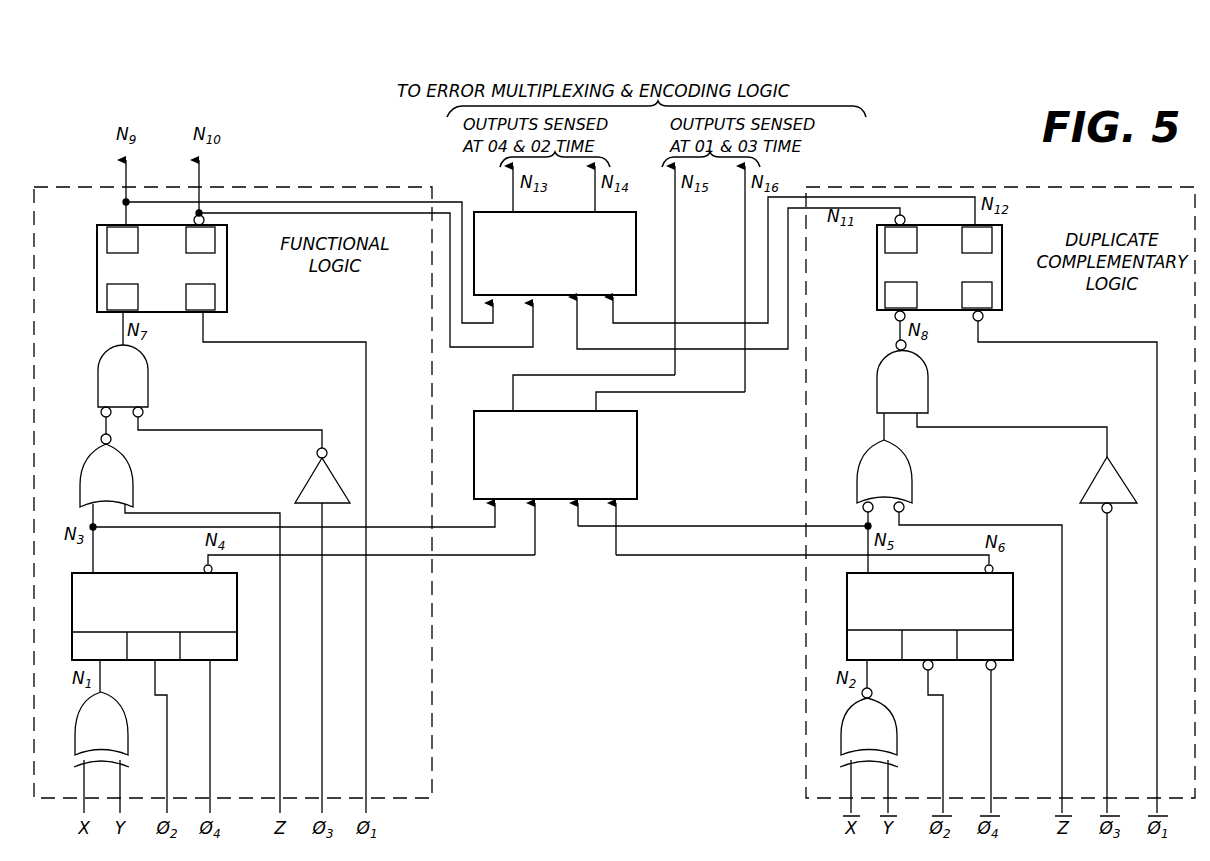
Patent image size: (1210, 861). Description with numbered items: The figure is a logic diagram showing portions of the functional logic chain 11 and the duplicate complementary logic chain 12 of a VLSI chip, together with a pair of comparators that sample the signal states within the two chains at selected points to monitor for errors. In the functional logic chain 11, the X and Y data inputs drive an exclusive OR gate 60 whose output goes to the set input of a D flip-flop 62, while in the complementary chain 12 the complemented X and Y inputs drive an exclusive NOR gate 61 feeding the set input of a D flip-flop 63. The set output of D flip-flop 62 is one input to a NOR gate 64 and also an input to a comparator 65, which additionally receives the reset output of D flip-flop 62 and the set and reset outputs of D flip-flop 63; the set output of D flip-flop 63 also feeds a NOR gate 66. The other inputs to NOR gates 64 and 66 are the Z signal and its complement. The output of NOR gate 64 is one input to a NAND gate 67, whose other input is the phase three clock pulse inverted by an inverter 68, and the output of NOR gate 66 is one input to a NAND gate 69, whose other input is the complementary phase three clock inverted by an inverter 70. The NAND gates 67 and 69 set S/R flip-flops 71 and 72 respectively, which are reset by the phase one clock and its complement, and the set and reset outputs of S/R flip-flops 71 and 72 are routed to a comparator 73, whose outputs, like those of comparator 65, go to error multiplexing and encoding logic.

The functional logic chain 11 is at (433, 652).
The duplicate complementary logic chain 12 is at (812, 645).
The exclusive OR gate 60 is at (126, 716).
The exclusive NOR gate 61 is at (895, 722).
The D flip-flop 62 is at (150, 573).
The D flip-flop 63 is at (1013, 612).
The NOR gate 64 is at (133, 463).
The comparator 65 is at (637, 455).
The NOR gate 66 is at (912, 474).
The NAND gate 67 is at (148, 380).
The inverter 68 is at (302, 484).
The NAND gate 69 is at (877, 383).
The inverter 70 is at (1094, 476).
The S/R flip-flop 71 is at (227, 284).
The S/R flip-flop 72 is at (877, 280).
The comparator 73 is at (488, 212).